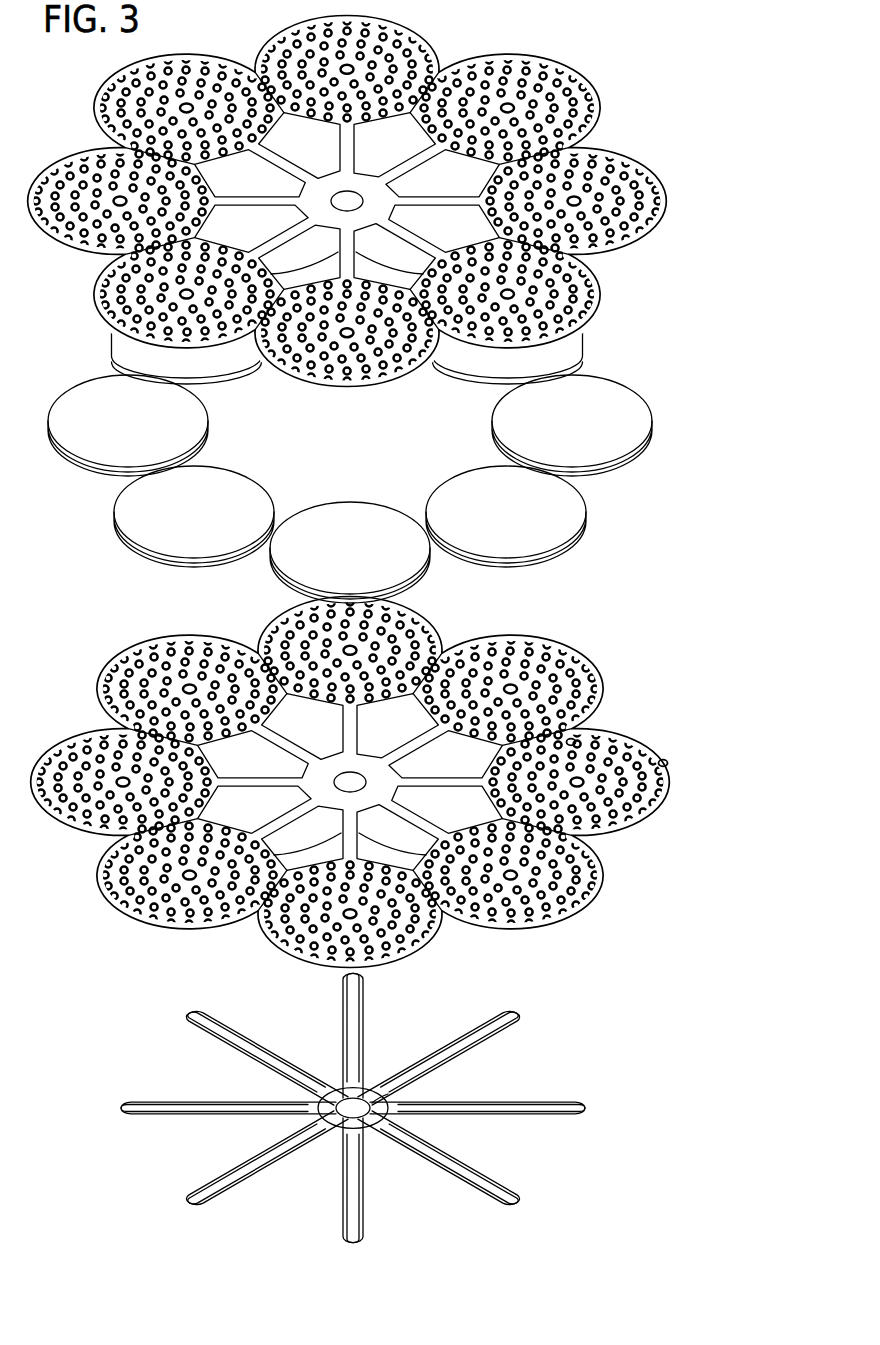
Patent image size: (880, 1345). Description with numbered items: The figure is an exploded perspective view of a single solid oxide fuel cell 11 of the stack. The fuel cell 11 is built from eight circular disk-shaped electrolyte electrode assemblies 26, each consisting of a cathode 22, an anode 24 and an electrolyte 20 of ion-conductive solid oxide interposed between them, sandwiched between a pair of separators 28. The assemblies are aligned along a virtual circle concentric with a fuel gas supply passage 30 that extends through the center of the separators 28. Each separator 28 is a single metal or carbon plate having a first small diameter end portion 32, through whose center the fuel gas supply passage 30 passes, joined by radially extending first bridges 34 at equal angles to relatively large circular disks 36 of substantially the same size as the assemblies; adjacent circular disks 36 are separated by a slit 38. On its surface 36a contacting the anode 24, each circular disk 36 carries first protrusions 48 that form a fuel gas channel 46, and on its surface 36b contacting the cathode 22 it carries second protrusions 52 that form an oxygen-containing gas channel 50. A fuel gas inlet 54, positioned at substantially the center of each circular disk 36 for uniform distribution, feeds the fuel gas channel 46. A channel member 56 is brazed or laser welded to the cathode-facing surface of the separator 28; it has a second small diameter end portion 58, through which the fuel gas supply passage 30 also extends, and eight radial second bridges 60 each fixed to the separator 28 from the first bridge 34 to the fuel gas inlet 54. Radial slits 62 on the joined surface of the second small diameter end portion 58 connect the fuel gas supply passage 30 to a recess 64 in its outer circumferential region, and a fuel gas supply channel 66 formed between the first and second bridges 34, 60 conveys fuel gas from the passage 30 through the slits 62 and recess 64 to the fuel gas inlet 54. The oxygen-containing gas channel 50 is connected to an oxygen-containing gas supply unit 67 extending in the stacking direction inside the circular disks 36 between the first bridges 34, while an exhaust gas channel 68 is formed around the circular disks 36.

The fuel cell 11 is at (552, 28).
The electrolyte 20 is at (350, 489).
The cathode 22 is at (146, 512).
The anode 24 is at (148, 535).
The electrolyte electrode assembly 26 is at (350, 489).
The separator 28 is at (618, 51).
The fuel gas supply passage 30 is at (345, 785).
The first small diameter end portion 32 is at (446, 754).
The first bridge 34 is at (397, 726).
The circular disk 36 is at (416, 616).
The surface contacting the anode 36a is at (582, 881).
The surface contacting the cathode 36b is at (430, 939).
The slit 38 is at (100, 756).
The fuel gas channel 46 is at (638, 797).
The first protrusion 48 is at (615, 705).
The oxygen-containing gas channel 50 is at (384, 913).
The second protrusion 52 is at (659, 735).
The fuel gas inlet 54 is at (518, 649).
The channel member 56 is at (353, 1102).
The second small diameter end portion 58 is at (380, 1069).
The second bridge 60 is at (500, 1103).
The slit 62 is at (400, 1098).
The recess 64 is at (332, 1130).
The fuel gas supply channel 66 is at (200, 1105).
The oxygen-containing gas supply unit 67 is at (349, 781).
The exhaust gas channel 68 is at (350, 785).